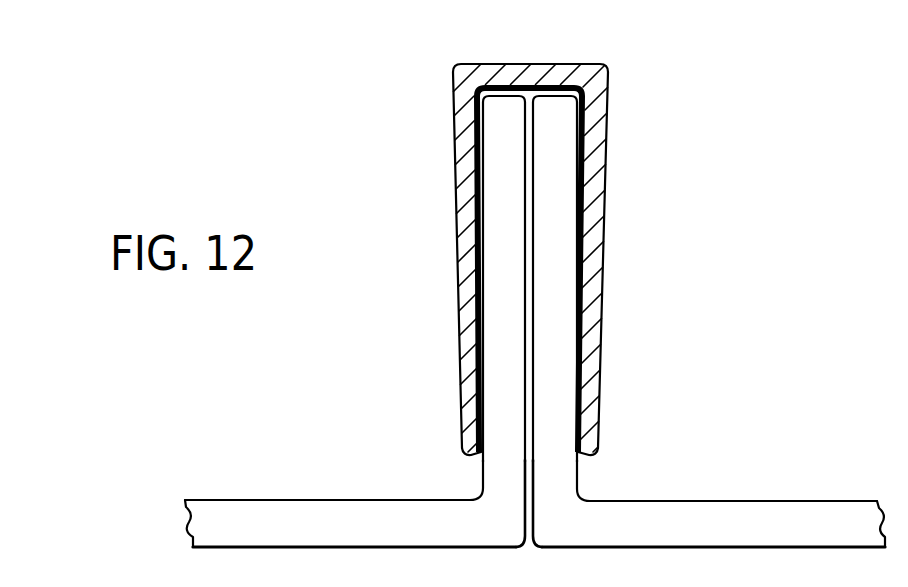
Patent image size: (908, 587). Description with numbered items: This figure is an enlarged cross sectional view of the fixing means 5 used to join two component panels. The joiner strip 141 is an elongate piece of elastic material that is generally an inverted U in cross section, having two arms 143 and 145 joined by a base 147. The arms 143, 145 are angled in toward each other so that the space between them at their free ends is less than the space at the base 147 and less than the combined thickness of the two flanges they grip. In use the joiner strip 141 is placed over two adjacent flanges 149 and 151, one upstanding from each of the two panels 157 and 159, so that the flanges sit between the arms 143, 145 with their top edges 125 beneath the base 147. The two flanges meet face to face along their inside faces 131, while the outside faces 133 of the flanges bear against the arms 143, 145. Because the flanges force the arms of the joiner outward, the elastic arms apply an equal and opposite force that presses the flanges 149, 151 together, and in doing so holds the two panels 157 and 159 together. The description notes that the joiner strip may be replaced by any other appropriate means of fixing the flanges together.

The closure assembly 5 is at (400, 100).
The top edge 125 is at (496, 90).
The inside face 131 is at (527, 195).
The outside face 133 is at (482, 125).
The joiner strip 141 is at (609, 110).
The arm 143 is at (600, 322).
The arm 145 is at (460, 318).
The base 147 is at (530, 63).
The flange 149 is at (495, 476).
The flange 151 is at (556, 471).
The panel 157 is at (297, 513).
The panel 159 is at (757, 514).